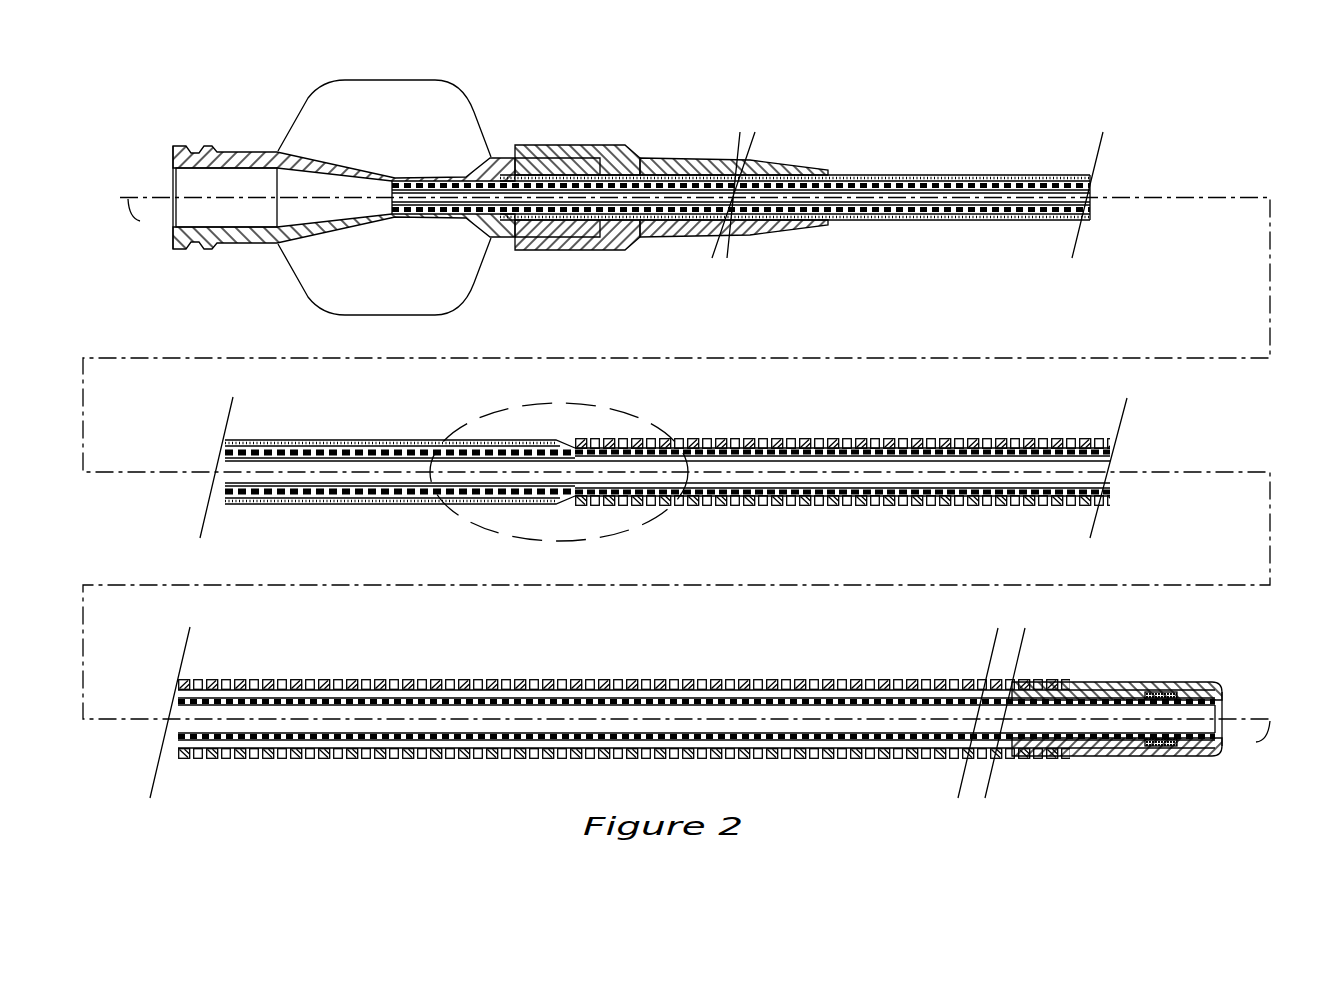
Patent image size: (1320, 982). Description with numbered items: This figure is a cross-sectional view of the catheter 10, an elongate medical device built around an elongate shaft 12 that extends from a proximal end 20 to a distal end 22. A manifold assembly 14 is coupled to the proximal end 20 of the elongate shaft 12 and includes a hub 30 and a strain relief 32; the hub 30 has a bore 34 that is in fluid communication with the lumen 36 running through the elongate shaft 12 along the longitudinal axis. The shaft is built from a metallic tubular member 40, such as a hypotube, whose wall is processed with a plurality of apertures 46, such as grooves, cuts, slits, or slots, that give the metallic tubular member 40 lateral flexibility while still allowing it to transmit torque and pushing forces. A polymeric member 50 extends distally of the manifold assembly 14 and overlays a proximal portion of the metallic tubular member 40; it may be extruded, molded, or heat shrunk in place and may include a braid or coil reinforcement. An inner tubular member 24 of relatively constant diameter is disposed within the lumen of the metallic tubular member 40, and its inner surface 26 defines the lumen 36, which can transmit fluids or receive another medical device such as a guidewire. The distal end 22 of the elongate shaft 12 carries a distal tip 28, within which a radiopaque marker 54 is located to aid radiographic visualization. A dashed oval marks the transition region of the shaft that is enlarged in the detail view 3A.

The catheter 10 is at (1187, 112).
The elongate shaft 12 is at (1031, 157).
The manifold assembly 14 is at (296, 96).
The proximal end 20 is at (523, 136).
The distal end 22 is at (1237, 662).
The inner tubular member 24 is at (946, 455).
The inner surface 26 is at (975, 205).
The distal tip 28 is at (1194, 760).
The hub 30 is at (253, 151).
The strain relief 32 is at (662, 158).
The bore 34 is at (250, 214).
The lumen 36 is at (905, 205).
The metallic tubular member 40 is at (1043, 440).
The apertures 46 is at (826, 438).
The polymeric member 50 is at (920, 175).
The radiopaque marker 54 is at (1160, 690).
The detail view region 3A is at (612, 412).